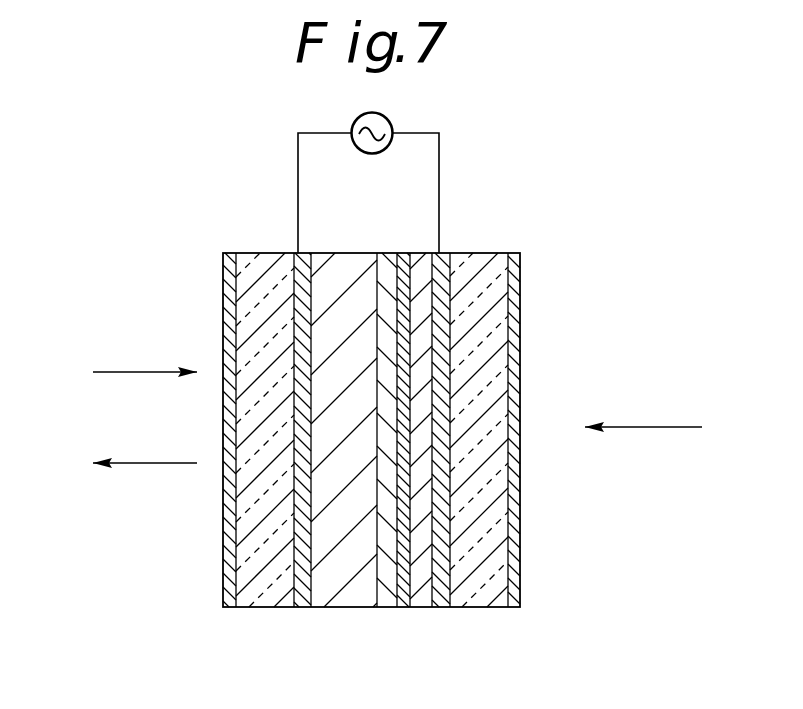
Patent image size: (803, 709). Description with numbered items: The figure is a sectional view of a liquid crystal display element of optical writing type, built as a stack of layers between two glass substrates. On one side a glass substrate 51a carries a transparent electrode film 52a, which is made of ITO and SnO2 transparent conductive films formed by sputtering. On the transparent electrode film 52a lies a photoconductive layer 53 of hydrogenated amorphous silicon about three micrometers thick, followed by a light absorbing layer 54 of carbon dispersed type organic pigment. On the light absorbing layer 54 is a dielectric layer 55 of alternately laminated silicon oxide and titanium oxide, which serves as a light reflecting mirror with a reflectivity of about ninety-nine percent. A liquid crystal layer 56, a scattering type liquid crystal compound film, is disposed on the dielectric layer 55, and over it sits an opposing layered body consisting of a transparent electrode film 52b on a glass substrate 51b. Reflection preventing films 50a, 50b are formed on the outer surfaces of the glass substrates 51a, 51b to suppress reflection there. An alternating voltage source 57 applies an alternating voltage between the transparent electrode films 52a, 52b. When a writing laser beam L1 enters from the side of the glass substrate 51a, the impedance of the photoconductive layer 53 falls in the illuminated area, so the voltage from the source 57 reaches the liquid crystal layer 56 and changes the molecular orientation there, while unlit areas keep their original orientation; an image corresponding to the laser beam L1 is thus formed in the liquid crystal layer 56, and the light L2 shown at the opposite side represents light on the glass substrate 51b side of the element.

The reflection preventing film 50a is at (512, 297).
The reflection preventing film 50b is at (228, 282).
The glass substrate 51a is at (485, 262).
The glass substrate 51b is at (245, 263).
The transparent electrode film 52a is at (450, 598).
The transparent electrode film 52b is at (302, 600).
The photoconductive layer 53 is at (426, 604).
The light absorbing layer 54 is at (405, 608).
The dielectric layer 55 is at (392, 603).
The liquid crystal layer 56 is at (350, 600).
The alternating voltage source 57 is at (388, 127).
The laser beam L1 is at (650, 428).
The transmitted light L2 is at (152, 370).